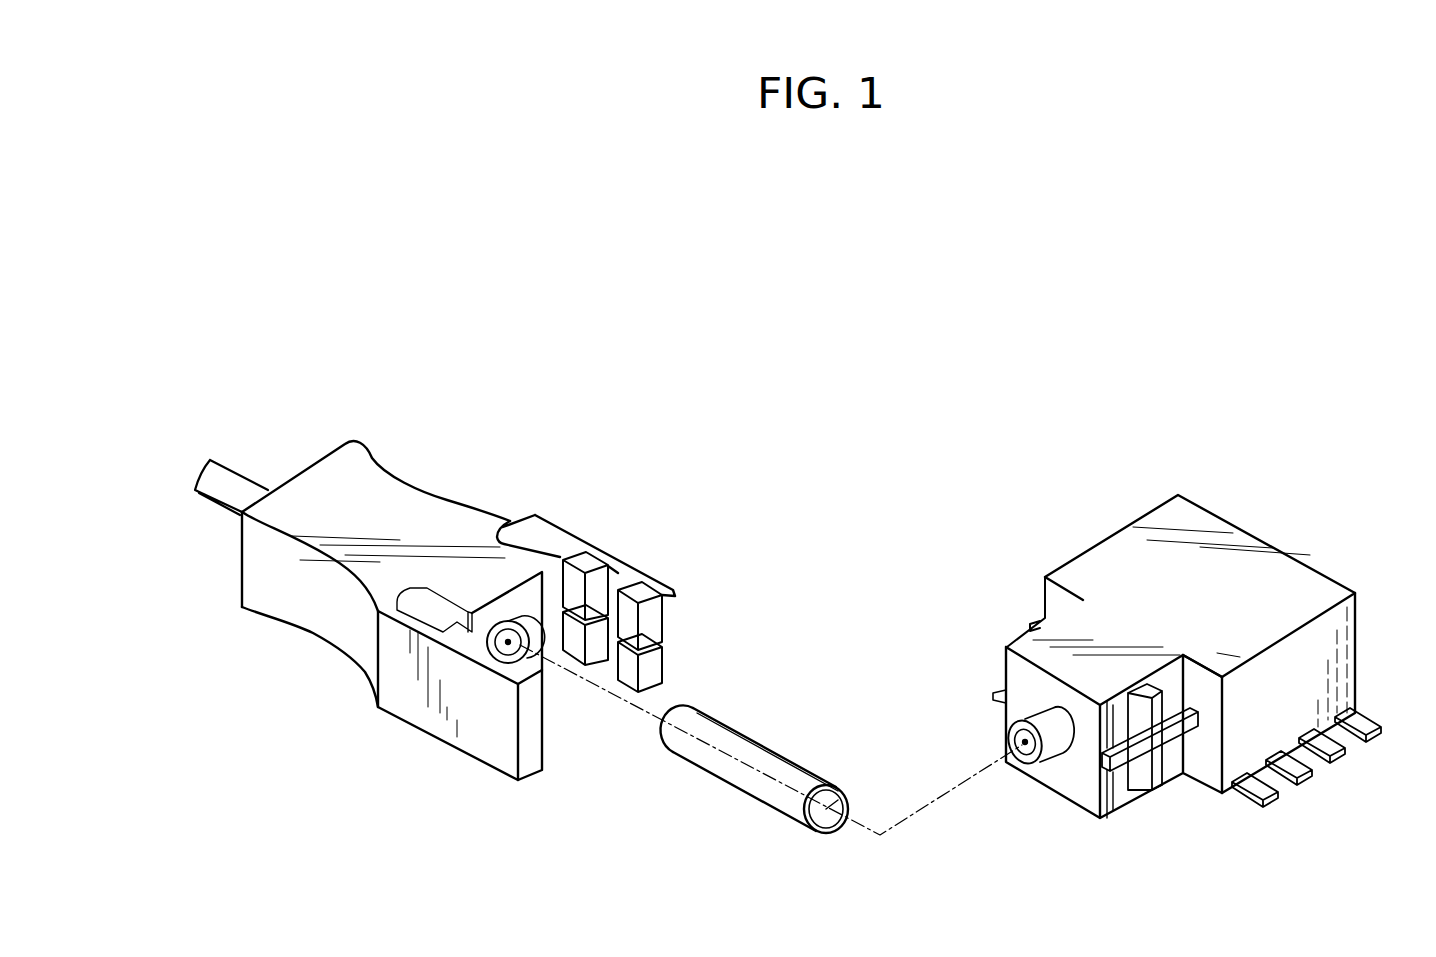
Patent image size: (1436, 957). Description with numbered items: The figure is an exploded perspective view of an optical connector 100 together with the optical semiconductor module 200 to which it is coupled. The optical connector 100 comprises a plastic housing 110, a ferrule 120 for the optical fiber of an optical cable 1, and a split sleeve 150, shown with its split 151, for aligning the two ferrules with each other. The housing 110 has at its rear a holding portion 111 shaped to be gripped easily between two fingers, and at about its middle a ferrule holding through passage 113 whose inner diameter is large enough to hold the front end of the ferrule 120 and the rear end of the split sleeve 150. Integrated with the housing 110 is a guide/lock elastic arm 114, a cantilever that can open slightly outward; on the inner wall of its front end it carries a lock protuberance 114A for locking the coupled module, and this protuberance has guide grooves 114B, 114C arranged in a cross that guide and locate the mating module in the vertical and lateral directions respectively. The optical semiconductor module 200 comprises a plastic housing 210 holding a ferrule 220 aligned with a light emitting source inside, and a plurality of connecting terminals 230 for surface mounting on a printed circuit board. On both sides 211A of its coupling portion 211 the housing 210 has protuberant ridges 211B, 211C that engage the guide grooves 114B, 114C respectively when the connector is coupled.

The optical cable 1 is at (237, 480).
The optical connector 100 is at (748, 440).
The housing 110 is at (361, 657).
The holding portion 111 is at (257, 602).
The ferrule holding through passage 113 is at (512, 644).
The guide/lock elastic arm 114 is at (487, 747).
The lock protuberance 114A is at (575, 578).
The guide groove 114B is at (657, 658).
The guide groove 114C is at (615, 582).
The ferrule 120 is at (507, 616).
The split sleeve 150 is at (745, 784).
The sleeve slit 151 is at (830, 788).
The optical semiconductor module 200 is at (1082, 533).
The housing 210 is at (1200, 523).
The coupling portion 211 is at (1067, 668).
The side 211A is at (1123, 797).
The protuberant ridge 211B is at (1098, 750).
The protuberant ridge 211C is at (1143, 770).
The ferrule 220 is at (1023, 717).
The connecting terminals 230 is at (1340, 755).